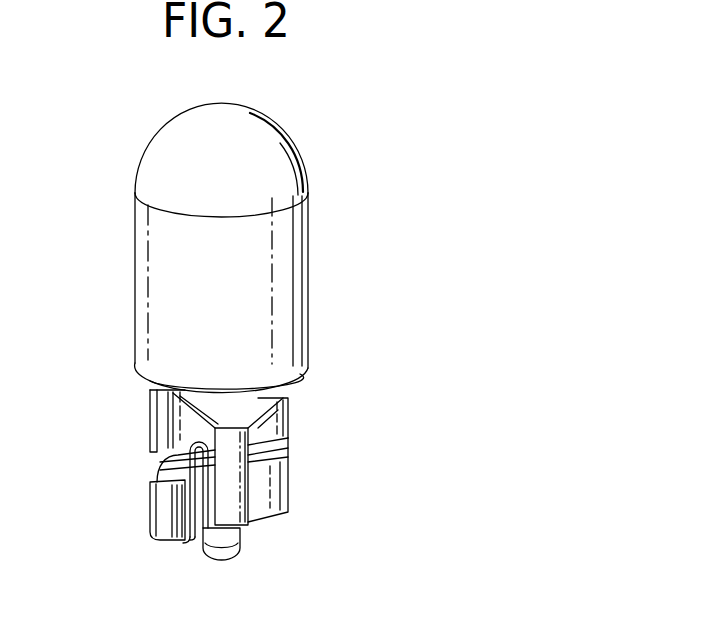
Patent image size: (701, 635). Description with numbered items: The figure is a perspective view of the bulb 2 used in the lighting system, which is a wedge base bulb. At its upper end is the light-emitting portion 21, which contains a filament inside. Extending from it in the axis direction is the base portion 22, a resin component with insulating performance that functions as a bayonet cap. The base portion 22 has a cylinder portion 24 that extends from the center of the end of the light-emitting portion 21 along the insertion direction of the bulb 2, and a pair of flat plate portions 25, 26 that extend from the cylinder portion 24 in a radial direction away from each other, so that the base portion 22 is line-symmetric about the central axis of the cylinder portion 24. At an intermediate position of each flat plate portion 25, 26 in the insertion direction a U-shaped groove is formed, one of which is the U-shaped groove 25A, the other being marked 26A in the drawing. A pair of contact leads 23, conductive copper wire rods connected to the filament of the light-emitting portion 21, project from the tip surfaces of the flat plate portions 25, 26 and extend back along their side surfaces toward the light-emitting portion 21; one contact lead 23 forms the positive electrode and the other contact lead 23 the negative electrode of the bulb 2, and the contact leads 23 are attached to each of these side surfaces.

The bulb 2 is at (122, 145).
The light-emitting portion 21 is at (133, 230).
The base portion 22 is at (150, 420).
The contact lead 23 is at (198, 405).
The cylinder portion 24 is at (262, 505).
The flat plate portion 25 is at (157, 517).
The U-shaped groove 25A is at (158, 470).
The flat plate portion 26 is at (290, 468).
The upper block portion 26A is at (285, 447).